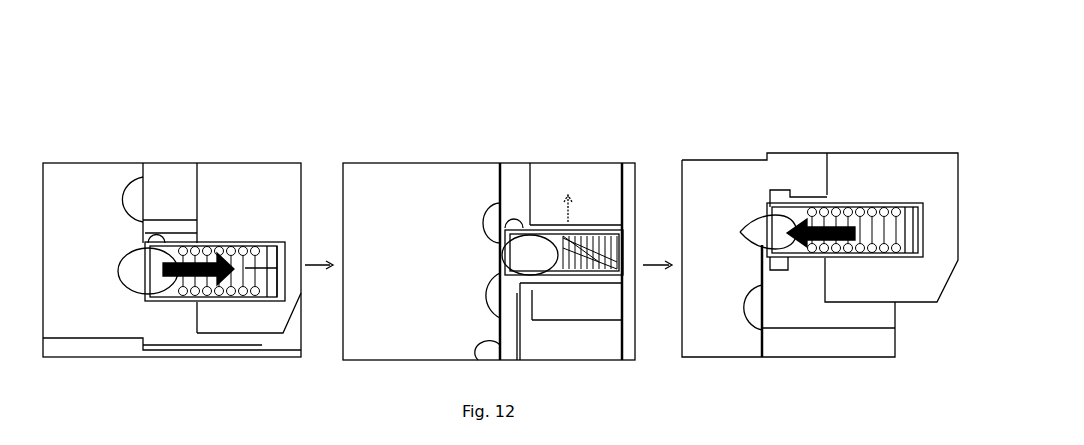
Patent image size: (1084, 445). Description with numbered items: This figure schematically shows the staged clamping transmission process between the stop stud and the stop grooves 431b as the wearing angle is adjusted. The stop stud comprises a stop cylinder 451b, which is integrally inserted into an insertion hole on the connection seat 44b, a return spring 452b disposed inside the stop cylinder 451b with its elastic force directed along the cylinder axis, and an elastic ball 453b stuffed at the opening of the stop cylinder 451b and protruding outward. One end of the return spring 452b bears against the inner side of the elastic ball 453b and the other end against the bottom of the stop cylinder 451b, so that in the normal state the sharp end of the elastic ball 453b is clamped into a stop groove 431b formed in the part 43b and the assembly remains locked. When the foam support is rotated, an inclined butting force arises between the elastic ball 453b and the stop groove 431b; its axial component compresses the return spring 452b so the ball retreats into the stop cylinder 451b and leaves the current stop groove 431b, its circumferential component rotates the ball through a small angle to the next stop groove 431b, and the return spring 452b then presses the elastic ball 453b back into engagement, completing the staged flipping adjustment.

The housing 43b is at (412, 188).
The stop groove 431b is at (490, 225).
The elastic ball 453b is at (527, 250).
The stop cylinder 451b is at (557, 227).
The return spring 452b is at (573, 258).
The connection seat 44b is at (605, 202).